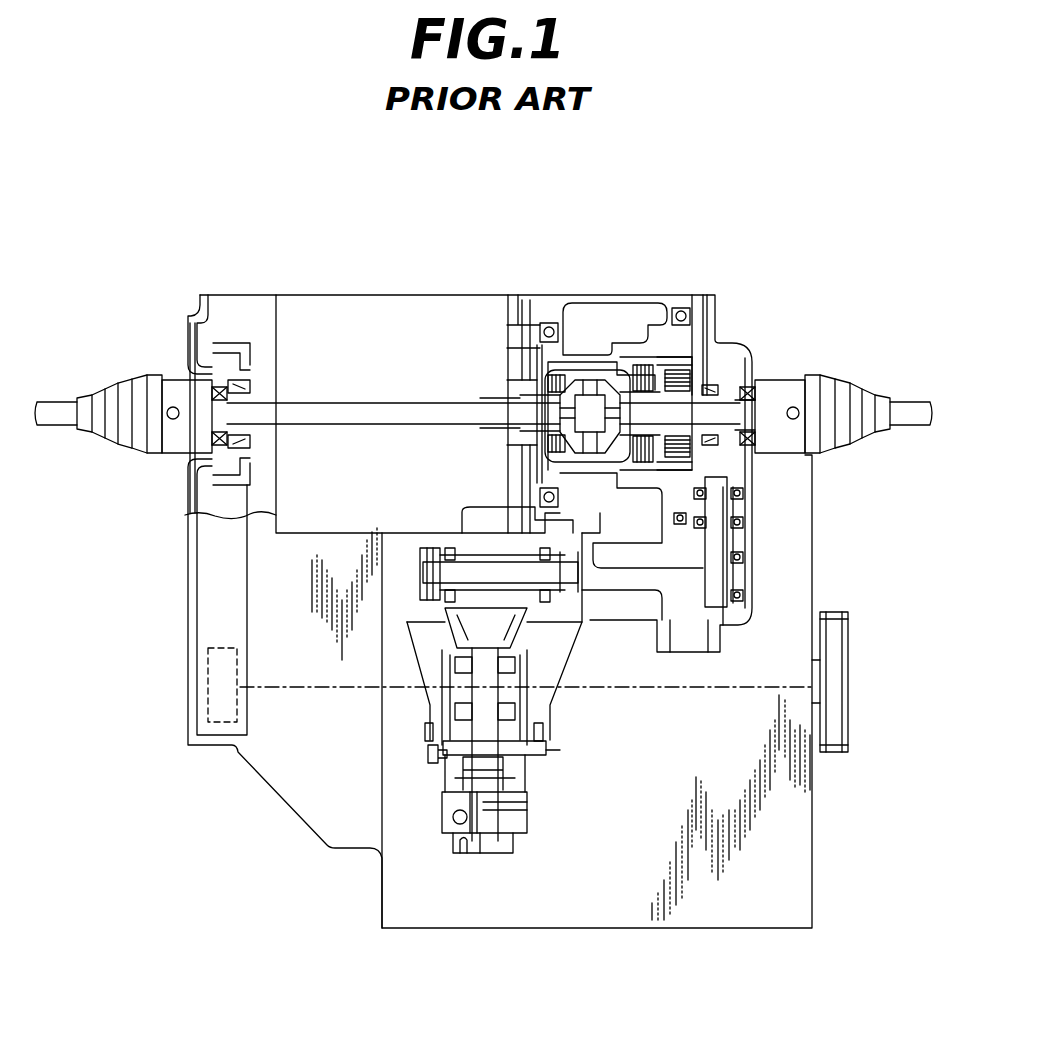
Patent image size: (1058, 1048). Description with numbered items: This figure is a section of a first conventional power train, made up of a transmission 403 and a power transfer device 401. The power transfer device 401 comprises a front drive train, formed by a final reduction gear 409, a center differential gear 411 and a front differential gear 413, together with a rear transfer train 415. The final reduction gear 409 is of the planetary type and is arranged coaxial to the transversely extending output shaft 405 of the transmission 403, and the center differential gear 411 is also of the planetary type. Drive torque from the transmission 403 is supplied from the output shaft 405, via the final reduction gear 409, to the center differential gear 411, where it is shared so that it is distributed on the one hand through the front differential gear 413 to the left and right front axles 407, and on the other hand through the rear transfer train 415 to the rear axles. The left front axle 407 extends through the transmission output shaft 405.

The power transfer device 401 is at (711, 285).
The transmission 403 is at (350, 293).
The output shaft 405 is at (482, 398).
The front axle 407 is at (698, 402).
The final reduction gear 409 is at (522, 318).
The center differential gear 411 is at (700, 352).
The front differential gear 413 is at (585, 460).
The rear transfer train 415 is at (556, 682).